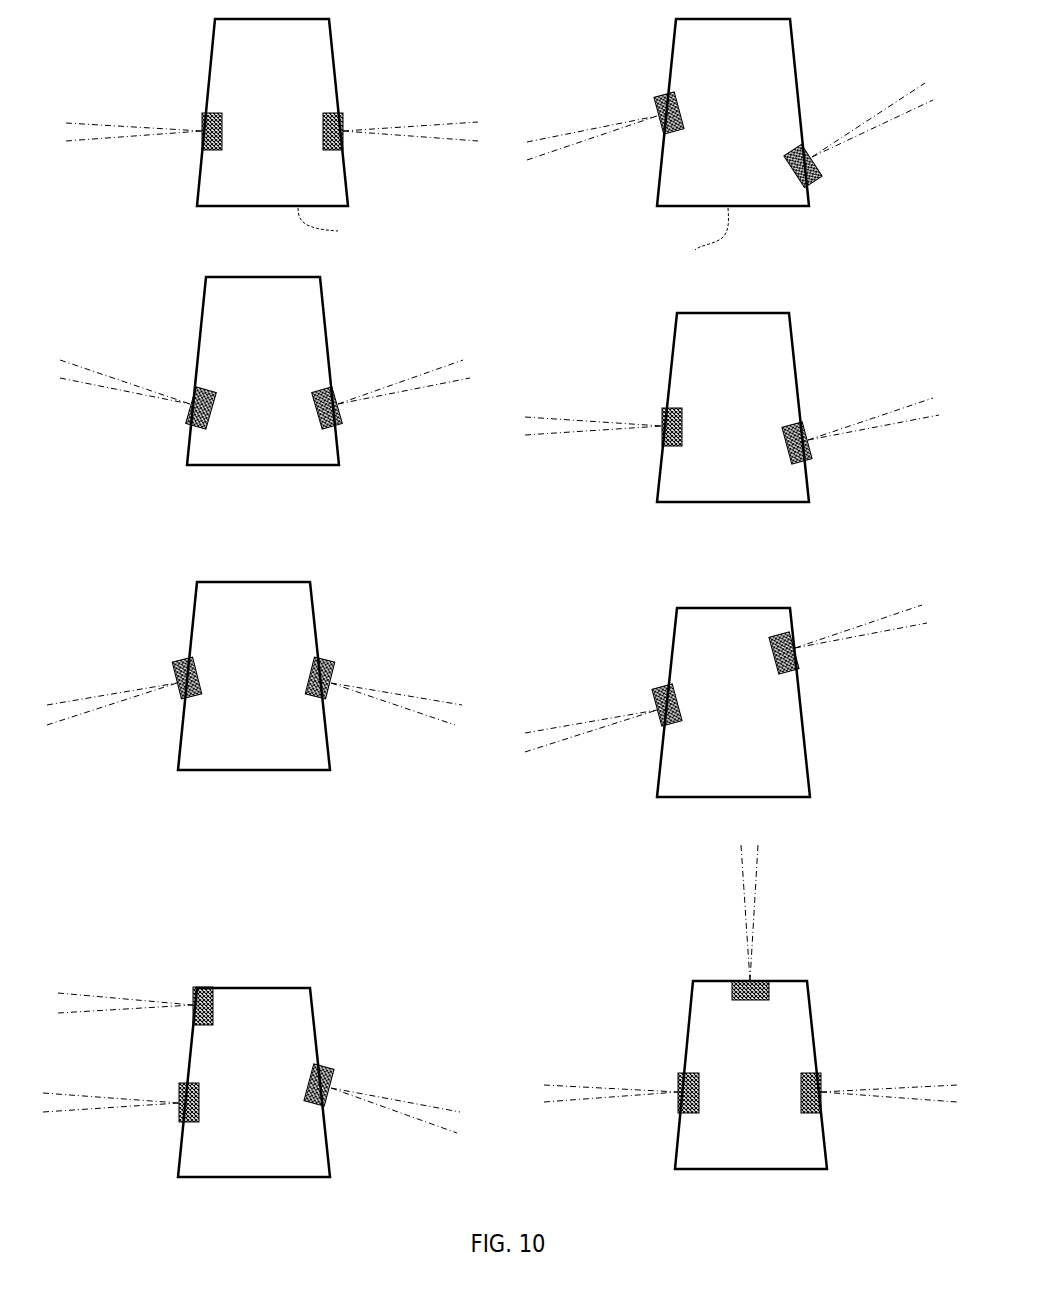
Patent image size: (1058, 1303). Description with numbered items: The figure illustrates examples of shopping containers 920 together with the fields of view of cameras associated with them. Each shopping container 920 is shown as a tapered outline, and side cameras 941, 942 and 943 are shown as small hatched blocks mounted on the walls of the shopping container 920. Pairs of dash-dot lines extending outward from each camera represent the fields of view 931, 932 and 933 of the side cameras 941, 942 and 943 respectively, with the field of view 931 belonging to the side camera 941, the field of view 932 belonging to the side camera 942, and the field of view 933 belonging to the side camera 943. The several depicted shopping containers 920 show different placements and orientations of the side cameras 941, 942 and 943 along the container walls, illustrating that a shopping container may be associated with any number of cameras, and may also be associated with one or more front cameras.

The shopping container 920 is at (290, 66).
The field of view 931 is at (82, 124).
The field of view 932 is at (455, 123).
The field of view 933 is at (755, 913).
The side camera 941 is at (222, 152).
The side camera 942 is at (323, 139).
The side camera 943 is at (750, 1000).